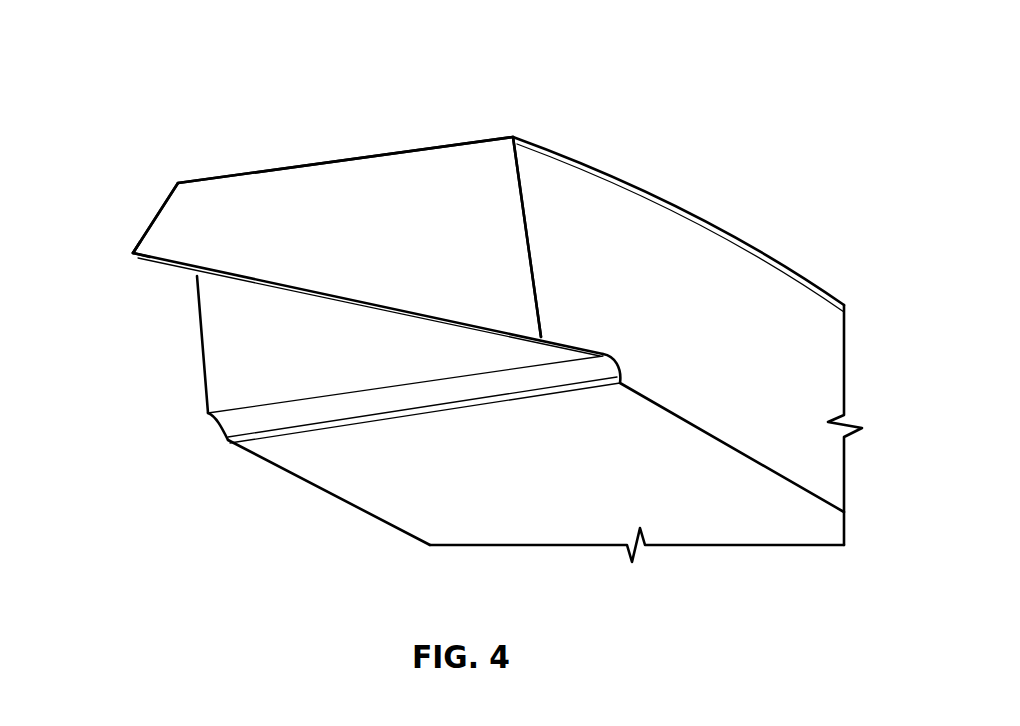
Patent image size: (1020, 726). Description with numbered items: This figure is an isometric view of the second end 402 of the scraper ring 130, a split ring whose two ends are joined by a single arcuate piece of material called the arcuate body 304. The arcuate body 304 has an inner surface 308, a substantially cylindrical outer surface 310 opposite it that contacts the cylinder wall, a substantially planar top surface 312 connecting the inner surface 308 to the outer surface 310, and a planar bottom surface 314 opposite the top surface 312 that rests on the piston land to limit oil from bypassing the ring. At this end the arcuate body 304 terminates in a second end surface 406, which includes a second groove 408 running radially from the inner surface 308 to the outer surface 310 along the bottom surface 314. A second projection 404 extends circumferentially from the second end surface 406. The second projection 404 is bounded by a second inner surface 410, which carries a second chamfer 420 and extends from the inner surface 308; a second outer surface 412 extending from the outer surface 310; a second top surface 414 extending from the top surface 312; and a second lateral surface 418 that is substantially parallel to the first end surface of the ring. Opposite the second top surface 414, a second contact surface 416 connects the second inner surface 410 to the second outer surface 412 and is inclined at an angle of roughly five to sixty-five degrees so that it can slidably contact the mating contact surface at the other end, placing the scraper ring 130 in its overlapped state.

The scraper ring 130 is at (150, 59).
The second end 402 is at (469, 72).
The arcuate body 304 is at (768, 258).
The inner surface 308 is at (201, 352).
The outer surface 310 is at (823, 378).
The top surface 312 is at (713, 227).
The bottom surface 314 is at (785, 538).
The second projection 404 is at (193, 272).
The second end surface 406 is at (303, 361).
The second groove 408 is at (216, 424).
The second inner surface 410 is at (132, 250).
The second outer surface 412 is at (553, 195).
The second top surface 414 is at (298, 165).
The second contact surface 416 is at (362, 303).
The second lateral surface 418 is at (346, 249).
The second chamfer 420 is at (157, 210).